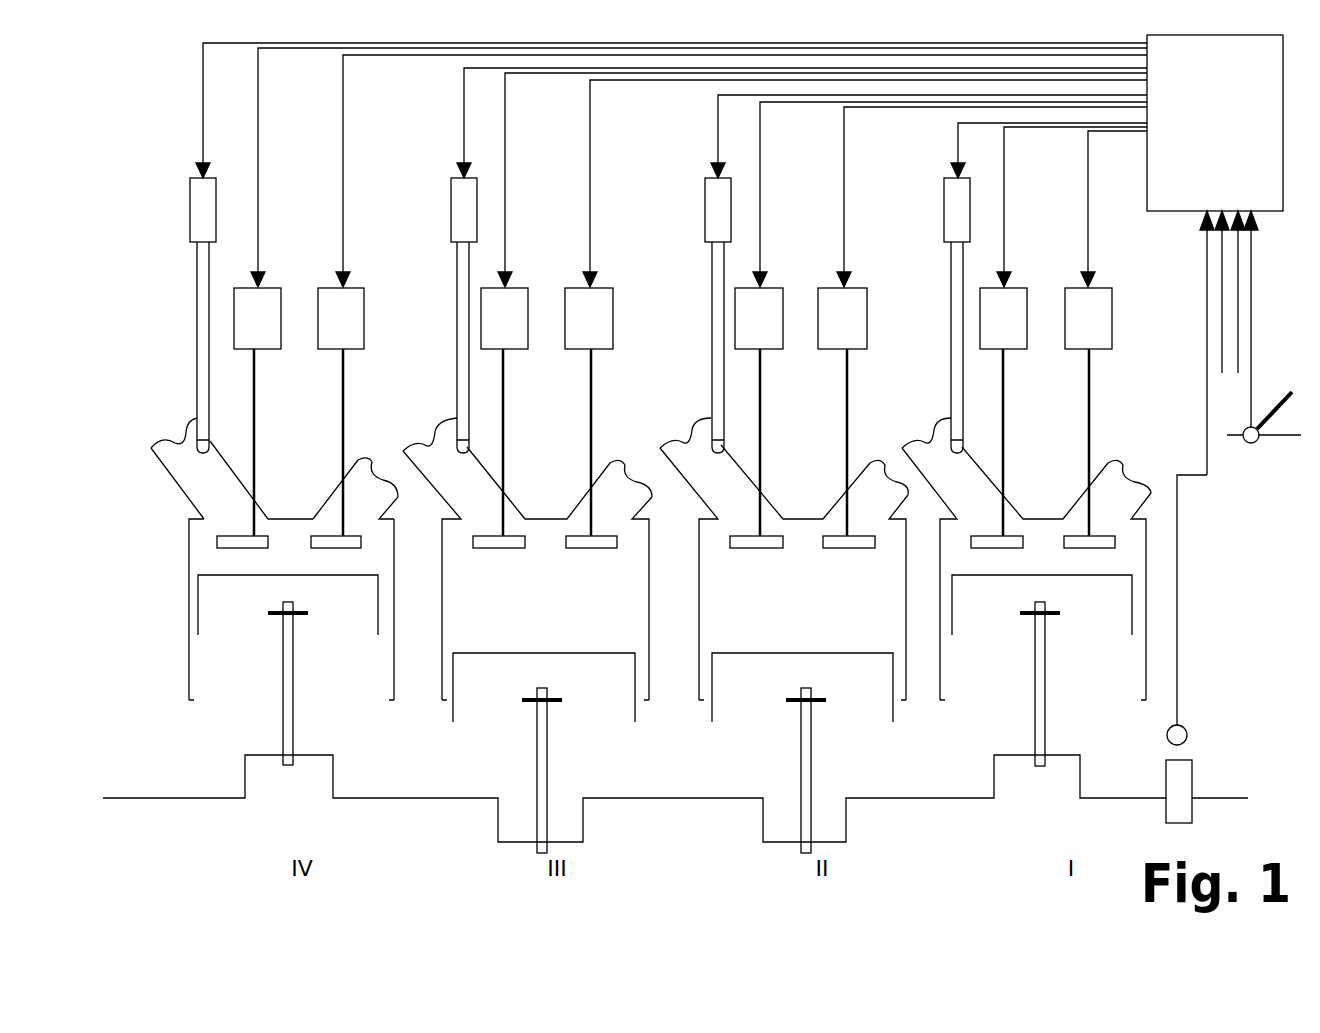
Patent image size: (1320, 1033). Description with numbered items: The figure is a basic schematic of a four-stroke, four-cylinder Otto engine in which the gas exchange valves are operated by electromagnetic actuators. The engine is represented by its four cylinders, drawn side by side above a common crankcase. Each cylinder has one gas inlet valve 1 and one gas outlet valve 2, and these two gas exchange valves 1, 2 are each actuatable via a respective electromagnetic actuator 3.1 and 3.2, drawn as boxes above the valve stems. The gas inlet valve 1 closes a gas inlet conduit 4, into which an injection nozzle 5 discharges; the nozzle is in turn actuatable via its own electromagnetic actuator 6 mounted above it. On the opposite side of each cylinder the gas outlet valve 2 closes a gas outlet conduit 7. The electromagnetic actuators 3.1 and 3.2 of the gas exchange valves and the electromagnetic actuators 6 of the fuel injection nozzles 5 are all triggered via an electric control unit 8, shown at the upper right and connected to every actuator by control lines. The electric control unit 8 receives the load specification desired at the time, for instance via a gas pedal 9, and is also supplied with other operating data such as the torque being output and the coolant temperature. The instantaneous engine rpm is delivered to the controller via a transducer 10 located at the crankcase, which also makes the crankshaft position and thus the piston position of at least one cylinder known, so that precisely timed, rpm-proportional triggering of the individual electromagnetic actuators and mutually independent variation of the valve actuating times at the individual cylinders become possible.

The gas inlet valve 1 is at (224, 543).
The gas outlet valve 2 is at (343, 545).
The electromagnetic actuator 3.1 is at (268, 307).
The electromagnetic actuator 3.2 is at (352, 307).
The gas inlet conduit 4 is at (190, 418).
The injection nozzle 5 is at (200, 335).
The electromagnetic actuator 6 is at (190, 210).
The gas outlet conduit 7 is at (358, 460).
The electric control unit 8 is at (1262, 131).
The gas pedal 9 is at (1262, 408).
The transducer 10 is at (1208, 748).